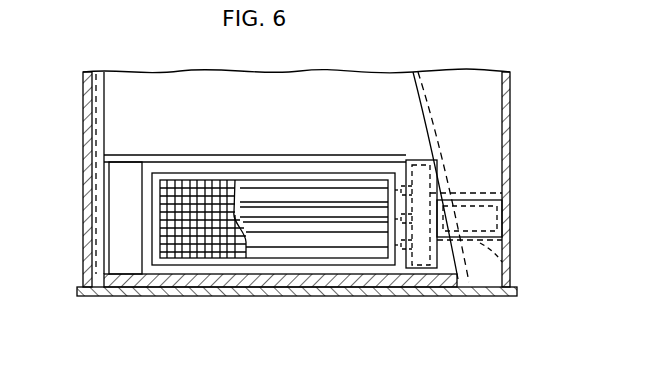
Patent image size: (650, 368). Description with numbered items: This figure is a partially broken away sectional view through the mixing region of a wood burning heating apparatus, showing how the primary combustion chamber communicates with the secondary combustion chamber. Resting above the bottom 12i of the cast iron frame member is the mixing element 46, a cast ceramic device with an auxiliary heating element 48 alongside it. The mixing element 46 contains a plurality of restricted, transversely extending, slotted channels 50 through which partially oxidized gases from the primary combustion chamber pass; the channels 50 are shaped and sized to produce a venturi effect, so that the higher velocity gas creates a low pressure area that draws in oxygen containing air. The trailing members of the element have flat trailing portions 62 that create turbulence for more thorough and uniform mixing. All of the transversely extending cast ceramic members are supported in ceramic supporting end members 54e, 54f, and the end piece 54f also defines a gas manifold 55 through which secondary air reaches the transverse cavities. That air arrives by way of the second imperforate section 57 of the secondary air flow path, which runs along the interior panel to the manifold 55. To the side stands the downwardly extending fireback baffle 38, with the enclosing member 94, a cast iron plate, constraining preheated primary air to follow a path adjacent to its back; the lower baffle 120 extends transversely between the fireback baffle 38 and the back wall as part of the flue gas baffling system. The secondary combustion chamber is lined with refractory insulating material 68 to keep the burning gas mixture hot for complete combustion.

The refractory insulating material 68 is at (97, 72).
The fireback baffle 38 is at (430, 94).
The mixing element 46 is at (262, 199).
The auxiliary heating element 48 is at (195, 212).
The flat trailing portions 62 is at (315, 217).
The ceramic supporting end member 54f is at (420, 160).
The ceramic supporting end member 54e is at (130, 270).
The lower baffle 120 is at (485, 193).
The second imperforate section 57 is at (478, 218).
The enclosing member 94 is at (510, 259).
The slotted channels 50 is at (335, 231).
The gas manifold 55 is at (420, 258).
The bottom 12i is at (440, 289).